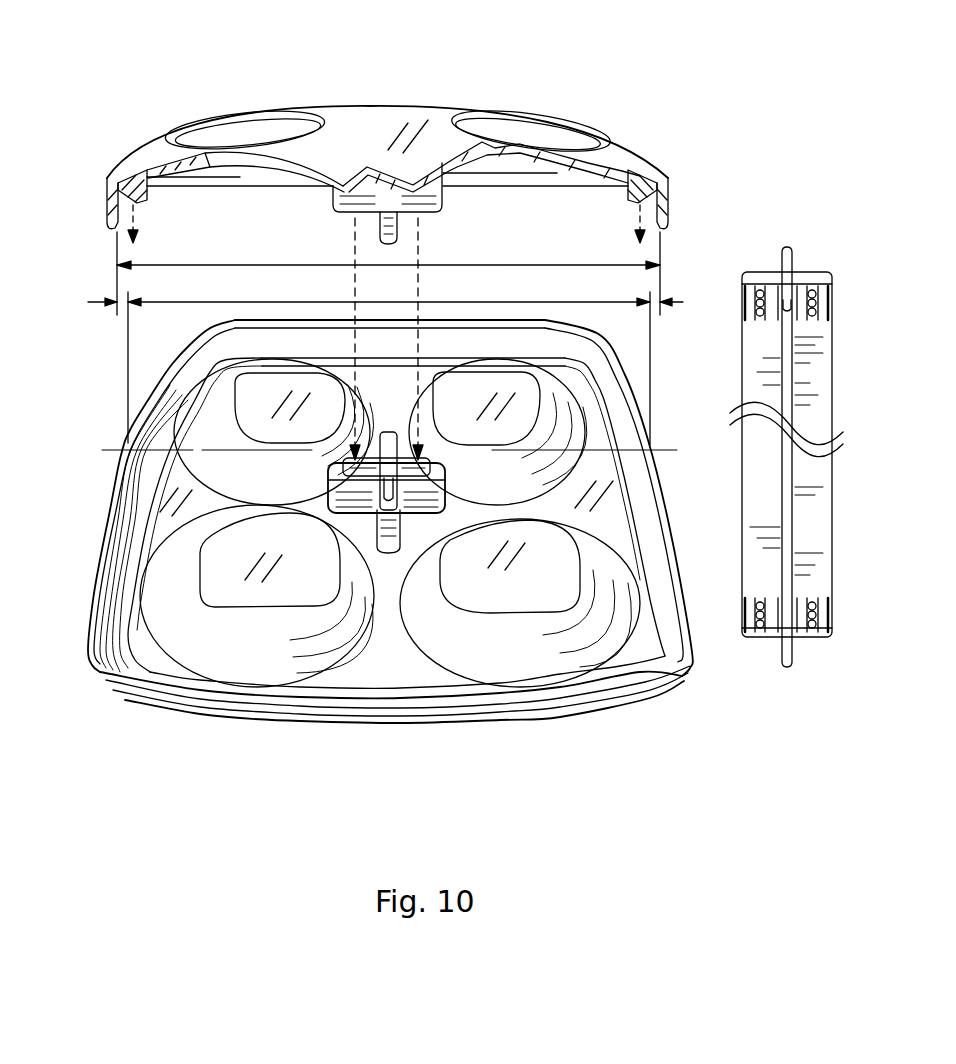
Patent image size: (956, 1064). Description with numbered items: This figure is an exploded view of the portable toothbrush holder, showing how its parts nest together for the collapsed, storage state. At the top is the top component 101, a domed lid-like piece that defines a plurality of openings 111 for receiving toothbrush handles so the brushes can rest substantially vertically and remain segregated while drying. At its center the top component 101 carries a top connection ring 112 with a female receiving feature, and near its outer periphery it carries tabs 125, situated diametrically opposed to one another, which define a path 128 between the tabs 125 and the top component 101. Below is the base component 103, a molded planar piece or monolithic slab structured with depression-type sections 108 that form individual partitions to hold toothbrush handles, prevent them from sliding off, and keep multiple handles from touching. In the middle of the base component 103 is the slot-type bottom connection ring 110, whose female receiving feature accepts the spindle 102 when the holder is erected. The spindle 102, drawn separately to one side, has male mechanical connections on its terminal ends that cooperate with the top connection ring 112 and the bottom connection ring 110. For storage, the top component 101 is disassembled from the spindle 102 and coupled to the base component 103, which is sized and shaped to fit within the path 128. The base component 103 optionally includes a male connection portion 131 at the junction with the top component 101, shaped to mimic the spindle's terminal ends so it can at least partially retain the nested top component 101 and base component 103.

The top component 101 is at (370, 122).
The spindle 102 is at (800, 640).
The base component 103 is at (175, 718).
The depression-type sections 108 is at (253, 402).
The bottom connection ring 110 is at (330, 620).
The openings 111 is at (237, 137).
The top connection ring 112 is at (333, 212).
The tabs 125 is at (146, 203).
The path 128 is at (118, 313).
The male connection portion 131 is at (396, 490).